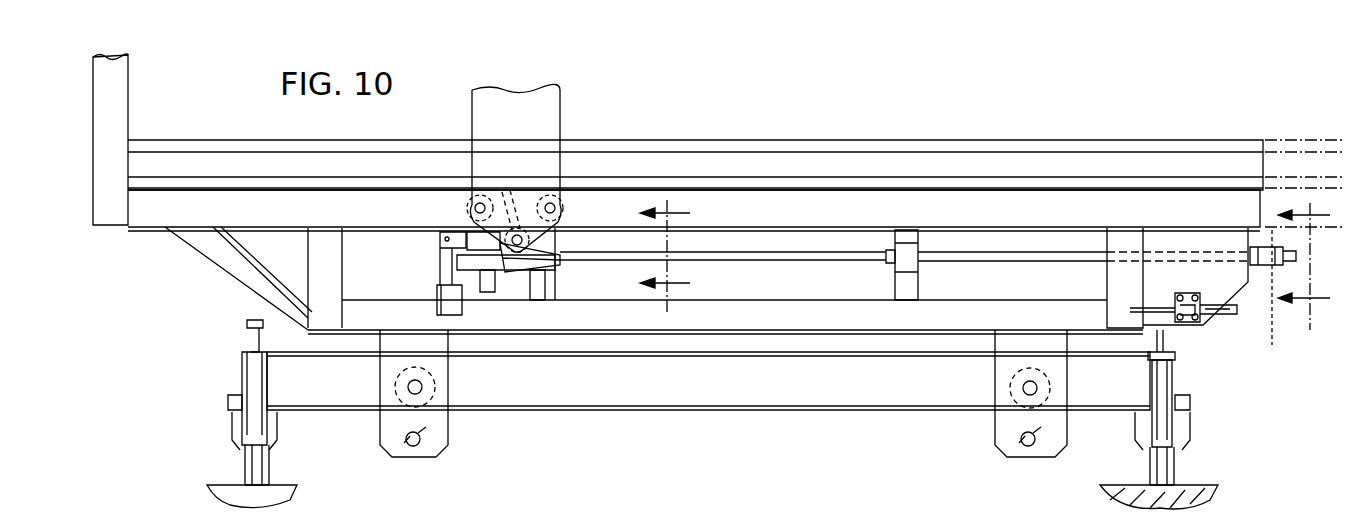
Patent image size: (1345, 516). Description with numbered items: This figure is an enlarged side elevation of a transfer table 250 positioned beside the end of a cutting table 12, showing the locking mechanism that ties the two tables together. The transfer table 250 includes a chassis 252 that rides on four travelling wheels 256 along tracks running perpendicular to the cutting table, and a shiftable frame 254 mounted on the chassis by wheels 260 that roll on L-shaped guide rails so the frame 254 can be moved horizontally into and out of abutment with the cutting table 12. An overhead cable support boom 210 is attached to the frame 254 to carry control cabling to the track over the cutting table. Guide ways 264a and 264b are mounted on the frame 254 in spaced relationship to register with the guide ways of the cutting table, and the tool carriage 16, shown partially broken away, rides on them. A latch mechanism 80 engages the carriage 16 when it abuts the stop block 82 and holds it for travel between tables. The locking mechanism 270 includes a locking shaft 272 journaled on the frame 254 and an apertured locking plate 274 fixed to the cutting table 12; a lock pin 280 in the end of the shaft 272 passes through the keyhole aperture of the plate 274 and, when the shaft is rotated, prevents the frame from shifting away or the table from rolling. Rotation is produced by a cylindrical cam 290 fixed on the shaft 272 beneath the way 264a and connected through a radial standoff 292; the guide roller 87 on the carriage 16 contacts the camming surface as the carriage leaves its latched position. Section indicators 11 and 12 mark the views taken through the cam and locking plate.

The overhead cable support boom 210 is at (118, 106).
The tool carriage 16 is at (563, 104).
The guide roller 87 is at (497, 196).
The radial standoff 292 is at (500, 245).
The locking mechanism 270 is at (568, 246).
The stop block 82 is at (440, 246).
The displaceable cam 290 is at (550, 276).
The latch mechanism 80 is at (471, 275).
The locking shaft 272 is at (803, 258).
The guide way 264a is at (772, 226).
The guide way 264b is at (1096, 140).
The transfer table 250 is at (873, 131).
The lock pin 280 is at (1246, 248).
The apertured locking plate 274 is at (1277, 275).
The wheels 260 is at (395, 387).
The chassis 252 is at (580, 410).
The shiftable frame 254 is at (738, 331).
The travelling wheels 256 is at (272, 478).
The cutting table 12 is at (1307, 160).
The section line 11- 11 is at (672, 255).